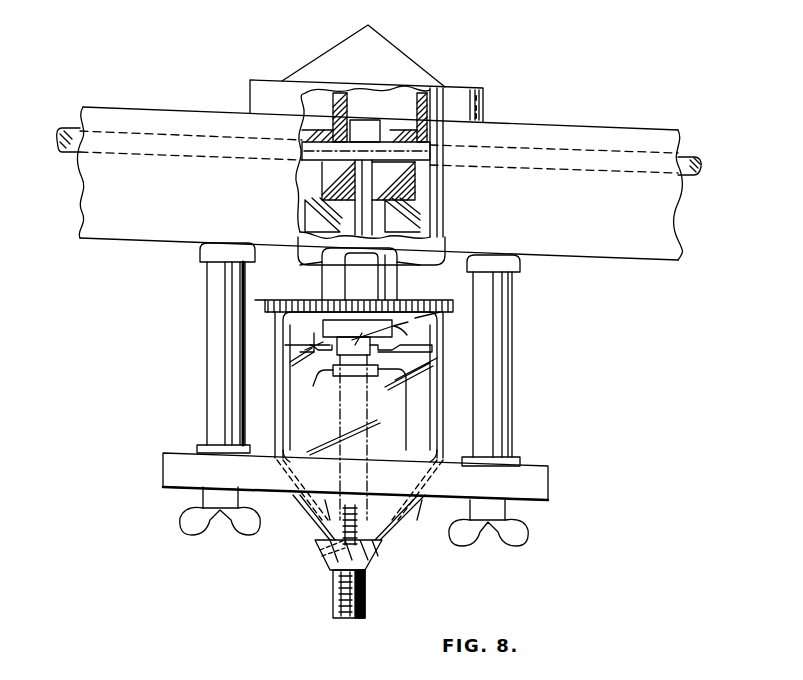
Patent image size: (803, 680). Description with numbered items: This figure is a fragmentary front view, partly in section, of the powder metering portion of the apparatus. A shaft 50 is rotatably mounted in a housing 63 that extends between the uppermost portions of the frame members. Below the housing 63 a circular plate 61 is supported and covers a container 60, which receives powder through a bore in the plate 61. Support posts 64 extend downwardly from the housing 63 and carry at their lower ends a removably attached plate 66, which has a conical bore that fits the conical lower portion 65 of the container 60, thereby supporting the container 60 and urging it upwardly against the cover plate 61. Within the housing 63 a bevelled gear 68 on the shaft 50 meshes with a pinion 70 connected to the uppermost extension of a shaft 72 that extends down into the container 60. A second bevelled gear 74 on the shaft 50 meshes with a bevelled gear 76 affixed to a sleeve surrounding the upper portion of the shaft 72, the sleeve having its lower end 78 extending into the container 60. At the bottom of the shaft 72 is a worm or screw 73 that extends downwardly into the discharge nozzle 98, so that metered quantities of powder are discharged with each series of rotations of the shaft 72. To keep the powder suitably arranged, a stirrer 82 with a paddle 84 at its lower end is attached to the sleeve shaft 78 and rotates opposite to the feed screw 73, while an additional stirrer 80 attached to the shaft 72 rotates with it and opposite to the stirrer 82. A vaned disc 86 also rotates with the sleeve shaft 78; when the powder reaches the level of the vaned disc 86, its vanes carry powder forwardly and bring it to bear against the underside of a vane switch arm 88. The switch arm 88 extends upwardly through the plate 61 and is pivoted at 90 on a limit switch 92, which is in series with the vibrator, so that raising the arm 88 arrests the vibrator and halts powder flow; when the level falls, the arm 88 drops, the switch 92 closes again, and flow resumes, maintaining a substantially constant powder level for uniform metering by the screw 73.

The shaft 50 is at (70, 131).
The container 60 is at (276, 404).
The plate 61 is at (262, 300).
The housing 63 is at (113, 121).
The support posts 64 is at (214, 355).
The conical lower portion 65 is at (302, 512).
The plate 66 is at (180, 464).
The bevelled gear 68 is at (330, 92).
The pinion 70 is at (420, 197).
The shaft 72 is at (362, 399).
The worm or screw 73 is at (367, 592).
The bevelled gear 74 is at (442, 88).
The bevelled gear 76 is at (432, 222).
The lower end of sleeve 78 is at (390, 347).
The stirrer 80 is at (398, 462).
The stirrer 82 is at (290, 425).
The paddle 84 is at (328, 548).
The vaned disc 86 is at (292, 343).
The vane switch arm 88 is at (412, 331).
The pivot 90 is at (400, 279).
The limit switch 92 is at (345, 283).
The discharge nozzle 98 is at (338, 588).